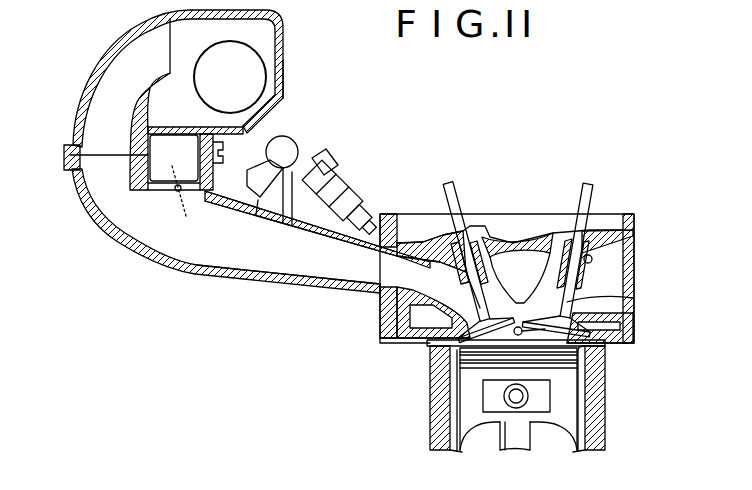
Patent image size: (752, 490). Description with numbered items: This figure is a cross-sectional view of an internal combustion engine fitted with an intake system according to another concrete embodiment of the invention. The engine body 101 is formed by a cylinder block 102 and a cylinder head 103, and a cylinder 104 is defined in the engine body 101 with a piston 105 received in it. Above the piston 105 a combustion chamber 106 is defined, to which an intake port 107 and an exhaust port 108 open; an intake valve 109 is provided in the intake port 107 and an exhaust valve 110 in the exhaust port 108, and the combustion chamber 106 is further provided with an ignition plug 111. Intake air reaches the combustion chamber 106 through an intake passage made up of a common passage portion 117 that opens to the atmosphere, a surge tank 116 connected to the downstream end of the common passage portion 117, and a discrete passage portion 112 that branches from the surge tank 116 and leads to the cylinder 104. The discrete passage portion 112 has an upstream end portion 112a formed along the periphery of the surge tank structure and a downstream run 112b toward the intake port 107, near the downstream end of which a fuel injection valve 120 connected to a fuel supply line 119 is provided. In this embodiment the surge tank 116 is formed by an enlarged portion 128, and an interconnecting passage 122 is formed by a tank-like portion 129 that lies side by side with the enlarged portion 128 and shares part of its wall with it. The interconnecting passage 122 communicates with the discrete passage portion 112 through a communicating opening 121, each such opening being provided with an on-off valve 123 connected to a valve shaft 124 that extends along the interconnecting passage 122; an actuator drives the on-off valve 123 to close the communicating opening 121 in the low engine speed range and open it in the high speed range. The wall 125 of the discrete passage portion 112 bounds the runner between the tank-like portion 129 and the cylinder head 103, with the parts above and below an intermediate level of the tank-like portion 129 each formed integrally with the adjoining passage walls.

The engine body 101 is at (428, 428).
The cylinder block 102 is at (600, 433).
The cylinder head 103 is at (617, 257).
The cylinder 104 is at (490, 443).
The piston 105 is at (560, 392).
The combustion chamber 106 is at (457, 370).
The intake port 107 is at (378, 329).
The exhaust port 108 is at (632, 297).
The intake valve 109 is at (470, 335).
The exhaust valve 110 is at (633, 333).
The ignition plug 111 is at (603, 362).
The discrete passage portion 112 is at (127, 254).
The upstream end portion 112a is at (107, 83).
The manifold runner portion 112b is at (310, 268).
The surge tank 116 is at (272, 40).
The common passage portion 117 is at (220, 52).
The fuel supply line 119 is at (286, 150).
The fuel injection valve 120 is at (350, 192).
The communicating opening 121 is at (328, 162).
The interconnecting passage 122 is at (184, 152).
The on-off valve 123 is at (158, 191).
The valve shaft 124 is at (177, 192).
The runner wall 125 is at (201, 207).
The enlarged portion 128 is at (290, 73).
The tank-like portion 129 is at (260, 144).